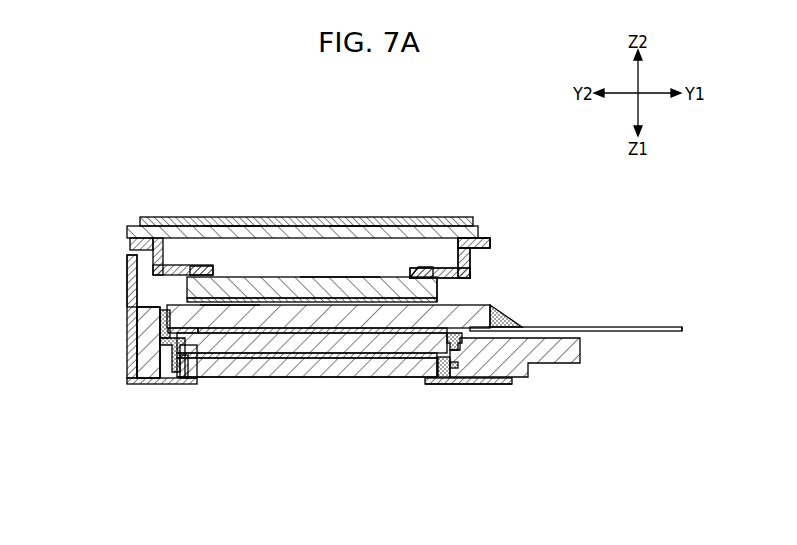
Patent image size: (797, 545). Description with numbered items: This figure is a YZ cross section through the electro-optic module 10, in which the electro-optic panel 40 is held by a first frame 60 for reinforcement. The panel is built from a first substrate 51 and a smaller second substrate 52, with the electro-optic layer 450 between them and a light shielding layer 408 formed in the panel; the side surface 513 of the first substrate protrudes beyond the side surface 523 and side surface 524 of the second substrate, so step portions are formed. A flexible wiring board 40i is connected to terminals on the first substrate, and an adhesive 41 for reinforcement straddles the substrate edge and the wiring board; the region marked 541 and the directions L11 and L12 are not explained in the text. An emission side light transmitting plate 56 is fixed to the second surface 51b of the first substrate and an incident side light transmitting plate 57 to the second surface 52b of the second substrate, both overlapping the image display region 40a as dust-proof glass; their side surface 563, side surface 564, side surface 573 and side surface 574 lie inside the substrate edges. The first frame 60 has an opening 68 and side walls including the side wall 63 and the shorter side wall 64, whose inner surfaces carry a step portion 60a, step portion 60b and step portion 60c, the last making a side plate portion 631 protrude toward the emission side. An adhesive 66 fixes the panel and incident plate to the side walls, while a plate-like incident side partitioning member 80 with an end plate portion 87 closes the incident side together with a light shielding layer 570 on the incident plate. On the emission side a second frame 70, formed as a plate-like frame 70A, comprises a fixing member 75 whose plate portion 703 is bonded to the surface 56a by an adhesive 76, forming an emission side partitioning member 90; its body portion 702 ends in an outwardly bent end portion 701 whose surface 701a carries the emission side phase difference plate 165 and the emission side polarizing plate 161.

The electro-optic module 10 is at (536, 194).
The electro-optic panel 40 is at (390, 452).
The image display region 40a is at (407, 122).
The flexible wiring board 40i is at (653, 332).
The adhesive for reinforcement 41 is at (522, 326).
The first substrate 51 is at (343, 318).
The second surface of the first substrate 51b is at (278, 331).
The second substrate 52 is at (369, 342).
The second surface of the second substrate 52b is at (320, 378).
The emission side light transmitting plate 56 is at (247, 292).
The surface of the emission side light transmitting plate 56a is at (340, 286).
The incident side light transmitting plate 57 is at (390, 380).
The first frame 60 is at (138, 367).
The step portion 60a is at (470, 386).
The step portion 60b is at (160, 347).
The step portion 60c is at (147, 307).
The side wall 63 is at (152, 340).
The side wall 64 is at (558, 360).
The adhesive 66 is at (178, 368).
The opening 68 is at (198, 388).
The second frame 70 is at (453, 254).
The plate-like frame 70A is at (467, 201).
The fixing member 75 is at (471, 255).
The adhesive 76 is at (353, 229).
The incident side partitioning member 80 is at (438, 388).
The end plate portion 87 is at (446, 385).
The emission side partitioning member 90 is at (306, 201).
The emission side polarizing plate 161 is at (272, 226).
The emission side phase difference plate 165 is at (234, 226).
The light shielding layer 408 is at (226, 323).
The electro-optic layer 450 is at (284, 357).
The side surface 513 is at (152, 322).
The side surface 523 is at (200, 333).
The side surface 524 is at (456, 336).
The adhesive wedge 541 is at (508, 313).
The side surface 563 is at (175, 282).
The side surface 564 is at (440, 290).
The light shielding layer 570 is at (428, 374).
The side surface 573 is at (171, 388).
The side surface 574 is at (460, 384).
The side plate portion 631 is at (143, 294).
The end portion 701 is at (489, 243).
The surface of the end portion 701a is at (481, 232).
The body portion 702 is at (472, 266).
The plate portion 703 is at (186, 227).
The direction L11 is at (312, 433).
The direction L12 is at (312, 170).